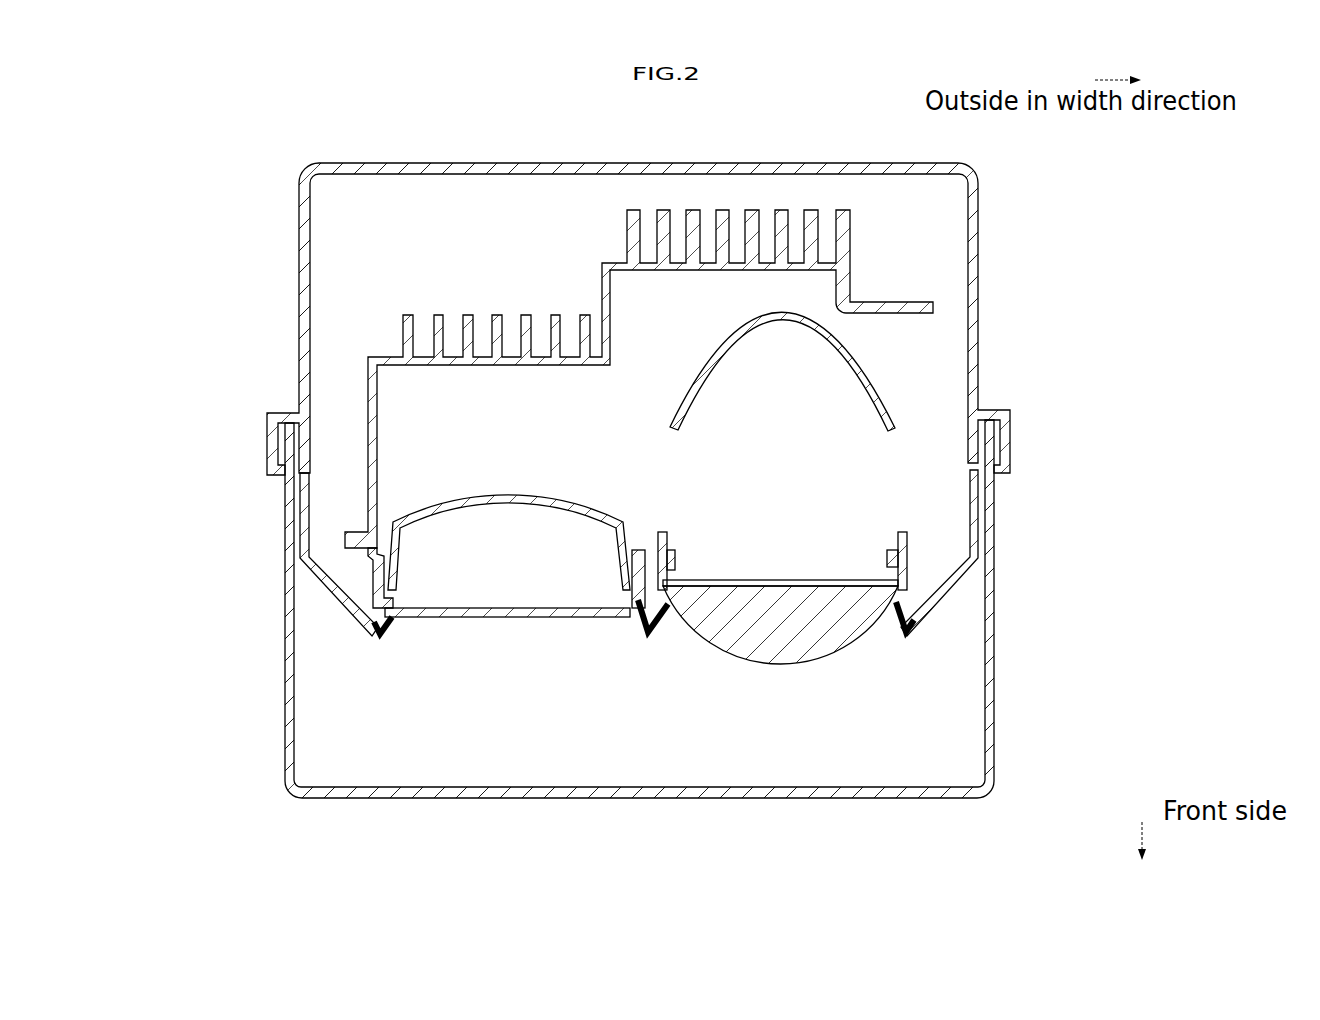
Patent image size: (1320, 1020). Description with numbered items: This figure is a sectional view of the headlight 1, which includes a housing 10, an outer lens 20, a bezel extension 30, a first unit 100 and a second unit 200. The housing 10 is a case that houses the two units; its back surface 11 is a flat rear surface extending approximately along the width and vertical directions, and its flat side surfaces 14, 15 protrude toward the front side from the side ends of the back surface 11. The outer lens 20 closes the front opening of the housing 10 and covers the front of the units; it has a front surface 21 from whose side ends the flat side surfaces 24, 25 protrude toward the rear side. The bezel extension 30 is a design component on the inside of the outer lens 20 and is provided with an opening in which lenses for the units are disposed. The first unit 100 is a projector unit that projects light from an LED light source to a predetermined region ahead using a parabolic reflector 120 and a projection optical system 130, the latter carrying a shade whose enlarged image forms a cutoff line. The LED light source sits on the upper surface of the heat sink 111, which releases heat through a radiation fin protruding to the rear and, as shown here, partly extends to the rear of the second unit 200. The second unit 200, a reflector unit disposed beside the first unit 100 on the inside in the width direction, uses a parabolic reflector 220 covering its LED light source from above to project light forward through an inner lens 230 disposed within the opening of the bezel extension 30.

The headlight 1 is at (273, 198).
The housing 10 is at (280, 232).
The back surface 11 is at (460, 167).
The side surface 14 is at (300, 305).
The side surface 15 is at (975, 288).
The heat sink 111 is at (603, 263).
The reflector 120 is at (878, 383).
The outer lens 20 is at (265, 745).
The front surface 21 is at (378, 795).
The side surface 24 is at (280, 637).
The side surface 25 is at (1000, 624).
The bezel extension 30 is at (308, 567).
The first unit 100 is at (718, 660).
The projection optical system 130 is at (787, 660).
The second unit 200 is at (472, 648).
The reflector 220 is at (507, 503).
The inner lens 230 is at (540, 612).